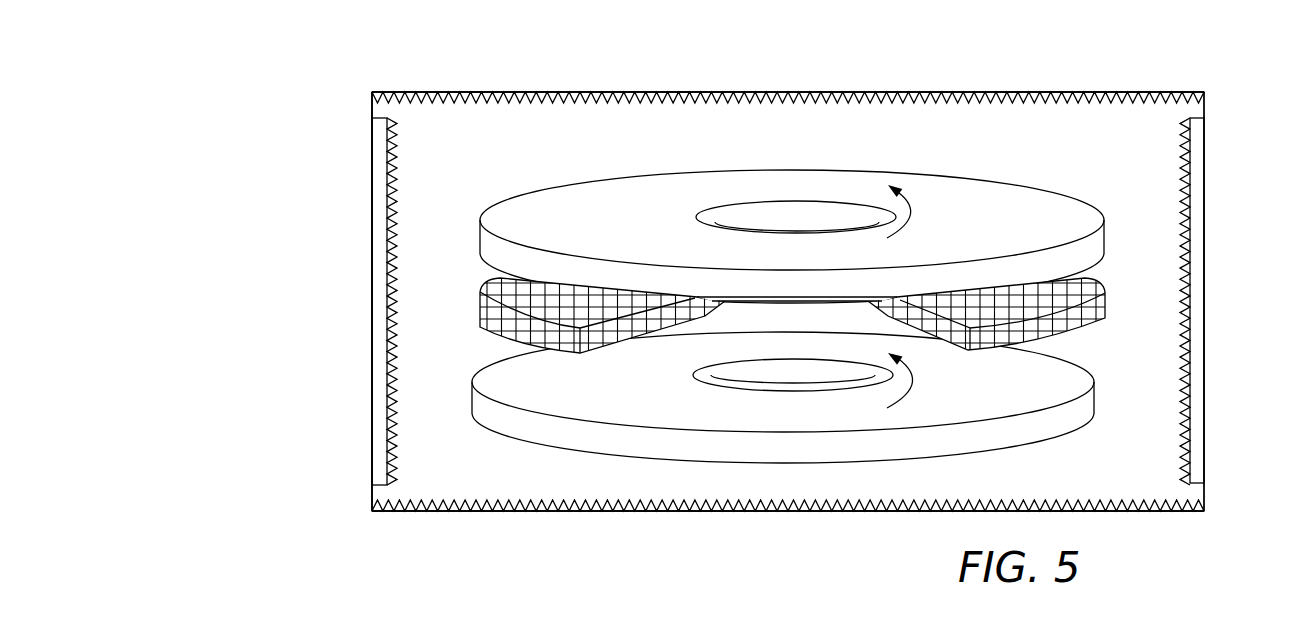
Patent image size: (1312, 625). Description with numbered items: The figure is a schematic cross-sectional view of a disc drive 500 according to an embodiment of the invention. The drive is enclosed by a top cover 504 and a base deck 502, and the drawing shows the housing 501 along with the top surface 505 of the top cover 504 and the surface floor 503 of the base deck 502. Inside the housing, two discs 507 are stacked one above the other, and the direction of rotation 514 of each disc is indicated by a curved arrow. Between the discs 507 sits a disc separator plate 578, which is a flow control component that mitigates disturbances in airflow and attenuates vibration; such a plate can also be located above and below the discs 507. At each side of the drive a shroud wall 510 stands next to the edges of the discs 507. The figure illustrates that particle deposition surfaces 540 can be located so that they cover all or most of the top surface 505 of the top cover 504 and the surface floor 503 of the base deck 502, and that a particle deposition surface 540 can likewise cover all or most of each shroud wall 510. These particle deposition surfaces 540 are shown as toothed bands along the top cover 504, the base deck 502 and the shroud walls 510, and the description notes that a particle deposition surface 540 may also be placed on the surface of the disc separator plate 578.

The disc drive 500 is at (1048, 63).
The housing 501 is at (343, 170).
The base deck 502 is at (370, 408).
The surface floor 503 is at (788, 512).
The top cover 504 is at (617, 92).
The top surface 505 is at (918, 92).
The discs 507 is at (507, 252).
The shroud wall 510 is at (380, 315).
The direction of rotation 514 is at (913, 210).
The particle deposition surface 540 is at (397, 243).
The disc separator plate 578 is at (500, 325).